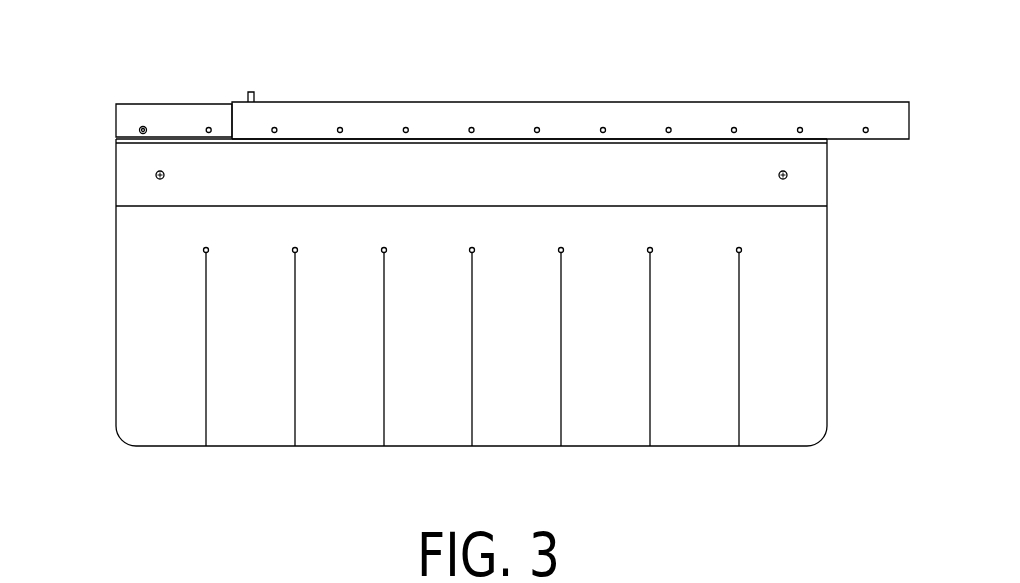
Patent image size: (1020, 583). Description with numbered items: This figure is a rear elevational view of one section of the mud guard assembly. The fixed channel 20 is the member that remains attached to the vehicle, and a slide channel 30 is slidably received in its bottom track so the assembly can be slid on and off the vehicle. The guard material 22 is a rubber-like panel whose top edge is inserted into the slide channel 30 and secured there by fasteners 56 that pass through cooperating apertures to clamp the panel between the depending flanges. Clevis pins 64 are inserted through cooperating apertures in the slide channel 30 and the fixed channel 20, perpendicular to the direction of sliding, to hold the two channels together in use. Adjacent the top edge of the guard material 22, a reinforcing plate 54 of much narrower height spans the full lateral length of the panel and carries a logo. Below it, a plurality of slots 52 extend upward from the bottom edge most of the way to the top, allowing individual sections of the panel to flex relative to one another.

The fixed channel 20 is at (697, 115).
The guard material 22 is at (166, 252).
The slide channel 30 is at (182, 118).
The slots 52 is at (207, 392).
The reinforcing plate 54 is at (120, 193).
The fasteners 56 is at (133, 123).
The clevis pins 64 is at (342, 128).